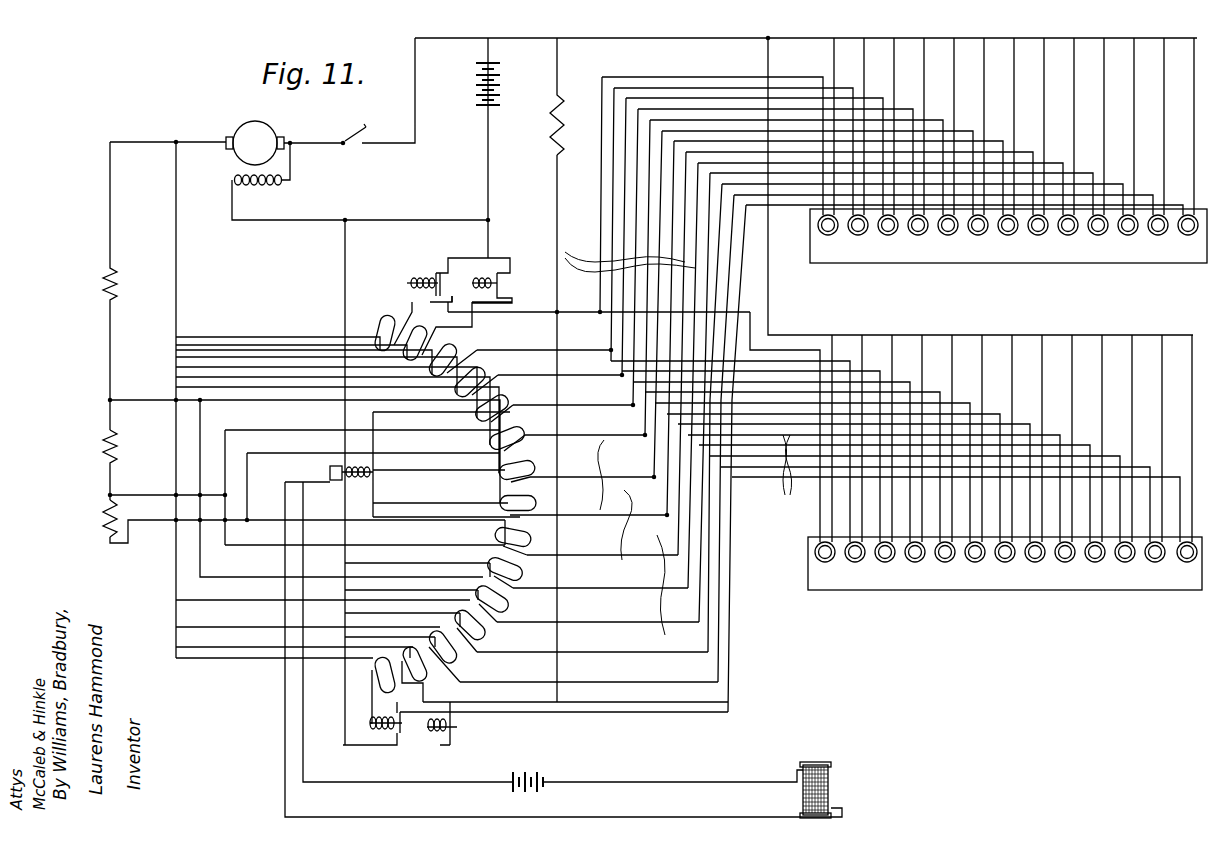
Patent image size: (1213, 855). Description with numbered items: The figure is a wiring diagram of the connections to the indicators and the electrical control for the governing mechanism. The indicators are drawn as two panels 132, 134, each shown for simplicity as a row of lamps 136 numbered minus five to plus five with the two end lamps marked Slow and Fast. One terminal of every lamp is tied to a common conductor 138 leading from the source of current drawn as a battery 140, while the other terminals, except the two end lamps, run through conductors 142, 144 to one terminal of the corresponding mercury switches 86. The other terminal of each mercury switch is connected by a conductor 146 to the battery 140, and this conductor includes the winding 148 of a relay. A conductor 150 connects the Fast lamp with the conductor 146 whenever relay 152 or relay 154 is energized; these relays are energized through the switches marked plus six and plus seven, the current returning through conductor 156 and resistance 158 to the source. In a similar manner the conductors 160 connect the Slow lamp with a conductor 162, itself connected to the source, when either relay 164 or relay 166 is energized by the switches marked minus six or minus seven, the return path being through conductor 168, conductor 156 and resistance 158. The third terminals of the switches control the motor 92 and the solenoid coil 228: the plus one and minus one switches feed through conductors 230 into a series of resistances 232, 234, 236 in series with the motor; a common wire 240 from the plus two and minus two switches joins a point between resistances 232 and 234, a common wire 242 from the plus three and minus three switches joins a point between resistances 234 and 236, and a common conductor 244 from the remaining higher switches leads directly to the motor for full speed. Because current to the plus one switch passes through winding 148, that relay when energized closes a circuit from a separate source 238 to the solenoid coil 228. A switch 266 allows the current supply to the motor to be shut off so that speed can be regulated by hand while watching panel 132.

The motor 92 is at (241, 126).
The switch 266 is at (368, 126).
The battery 140 is at (476, 107).
The resistance 158 is at (555, 134).
The conductor 156 is at (555, 204).
The common conductor 138 is at (994, 40).
The conductors 160 is at (636, 78).
The conductors 142 is at (684, 379).
The conductors 144 is at (631, 537).
The panel 132 is at (1017, 263).
The panel 134 is at (970, 590).
The lamps 136 is at (1187, 236).
The conductor 162 is at (486, 240).
The relay 164 is at (470, 277).
The relay 166 is at (411, 280).
The conductor 168 is at (528, 306).
The conductor 146 is at (344, 306).
The conductor 150 is at (702, 715).
The common conductor 244 is at (178, 326).
The common wire 242 is at (203, 425).
The common wire 240 is at (148, 495).
The resistance 236 is at (102, 292).
The resistance 234 is at (104, 456).
The resistance 232 is at (102, 512).
The winding of a relay 148 is at (368, 480).
The conductors 230 is at (422, 462).
The mercury switches 86 is at (522, 440).
The relay 154 is at (375, 735).
The relay 152 is at (432, 737).
The source 238 is at (548, 778).
The solenoid coil 228 is at (831, 774).